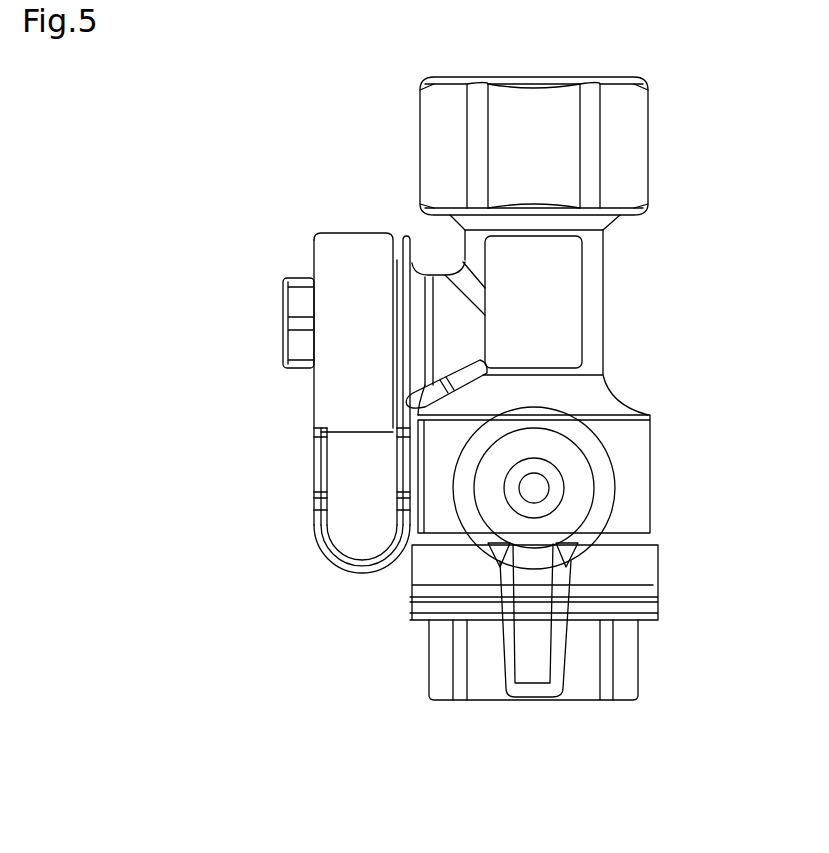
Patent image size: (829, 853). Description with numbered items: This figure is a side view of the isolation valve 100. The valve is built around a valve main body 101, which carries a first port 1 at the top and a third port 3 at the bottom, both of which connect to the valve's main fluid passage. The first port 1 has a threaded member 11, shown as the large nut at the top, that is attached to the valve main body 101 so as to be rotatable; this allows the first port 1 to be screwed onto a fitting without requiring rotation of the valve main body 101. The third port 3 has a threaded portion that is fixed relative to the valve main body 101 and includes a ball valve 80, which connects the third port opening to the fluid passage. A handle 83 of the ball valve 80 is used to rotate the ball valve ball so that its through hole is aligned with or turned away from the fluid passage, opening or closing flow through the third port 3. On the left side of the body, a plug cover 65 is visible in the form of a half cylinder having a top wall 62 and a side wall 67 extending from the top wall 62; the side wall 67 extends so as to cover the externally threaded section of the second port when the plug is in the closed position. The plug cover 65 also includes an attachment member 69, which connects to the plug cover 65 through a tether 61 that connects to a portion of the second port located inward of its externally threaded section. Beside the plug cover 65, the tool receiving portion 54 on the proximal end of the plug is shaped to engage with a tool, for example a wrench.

The isolation valve 100 is at (740, 48).
The first port 1 is at (428, 77).
The threaded member 11 is at (647, 163).
The valve main body 101 is at (604, 297).
The ball valve 80 is at (652, 487).
The handle 83 is at (563, 660).
The third port 3 is at (638, 646).
The top wall 62 is at (314, 388).
The side wall 67 is at (343, 233).
The plug cover 65 is at (365, 432).
The tether 61 is at (357, 575).
The attachment member 69 is at (405, 238).
The tool receiving portion 54 is at (298, 278).